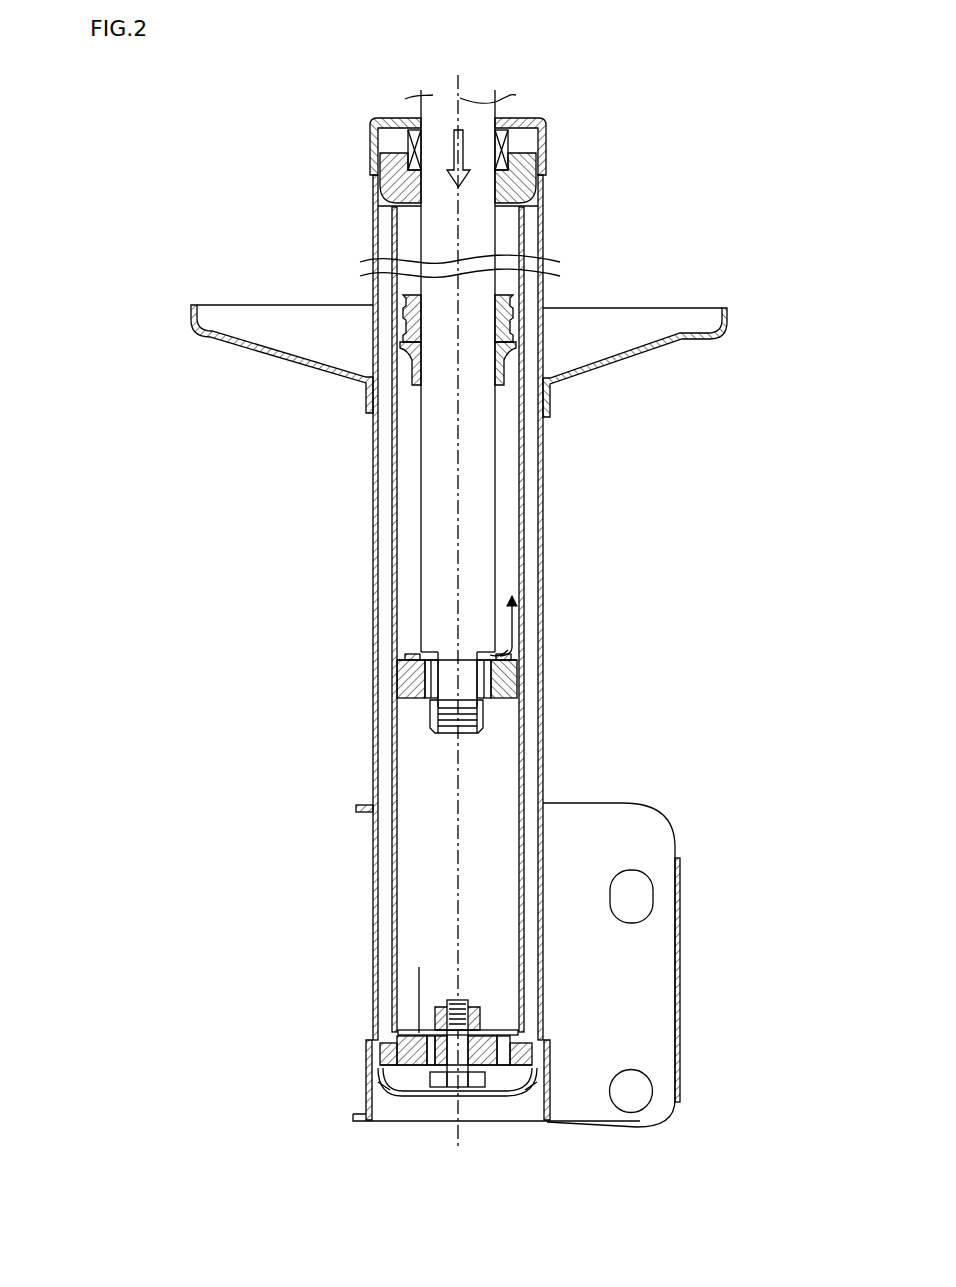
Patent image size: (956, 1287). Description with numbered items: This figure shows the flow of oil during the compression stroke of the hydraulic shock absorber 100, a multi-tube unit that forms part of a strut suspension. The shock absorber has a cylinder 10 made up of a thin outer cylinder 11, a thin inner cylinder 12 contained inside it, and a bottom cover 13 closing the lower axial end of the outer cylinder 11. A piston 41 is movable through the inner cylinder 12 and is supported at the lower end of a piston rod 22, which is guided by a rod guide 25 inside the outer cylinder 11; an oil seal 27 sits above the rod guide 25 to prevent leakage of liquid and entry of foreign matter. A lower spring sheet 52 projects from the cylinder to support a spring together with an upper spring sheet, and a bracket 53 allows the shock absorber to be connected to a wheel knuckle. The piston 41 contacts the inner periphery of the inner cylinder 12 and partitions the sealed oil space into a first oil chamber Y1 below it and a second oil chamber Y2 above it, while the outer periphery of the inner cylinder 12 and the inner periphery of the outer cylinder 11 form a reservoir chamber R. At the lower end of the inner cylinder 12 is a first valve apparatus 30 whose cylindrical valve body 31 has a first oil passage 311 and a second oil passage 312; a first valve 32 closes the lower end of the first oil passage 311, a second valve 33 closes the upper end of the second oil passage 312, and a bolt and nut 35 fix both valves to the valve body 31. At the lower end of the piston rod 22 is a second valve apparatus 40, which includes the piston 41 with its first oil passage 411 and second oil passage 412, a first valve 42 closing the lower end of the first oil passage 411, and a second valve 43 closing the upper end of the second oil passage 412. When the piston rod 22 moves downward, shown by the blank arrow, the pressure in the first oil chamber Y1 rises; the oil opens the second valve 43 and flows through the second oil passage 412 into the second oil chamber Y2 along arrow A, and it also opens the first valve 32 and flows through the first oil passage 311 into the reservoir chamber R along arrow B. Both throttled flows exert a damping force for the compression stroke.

The hydraulic shock absorber 100 is at (312, 110).
The cylinder 10 is at (327, 270).
The outer cylinder 11 is at (545, 498).
The inner cylinder 12 is at (545, 236).
The bottom cover 13 is at (407, 1093).
The piston rod 22 is at (480, 120).
The rod guide 25 is at (540, 185).
The oil seal 27 is at (408, 146).
The first valve apparatus 30 is at (473, 978).
The valve body 31 is at (368, 1047).
The first oil passage 311 is at (387, 1043).
The second oil passage 312 is at (540, 1040).
The first valve 32 is at (538, 1066).
The second valve 33 is at (412, 1030).
The bolt and nut 35 is at (453, 1003).
The second valve apparatus 40 is at (435, 744).
The piston 41 is at (396, 678).
The first oil passage 411 is at (394, 692).
The second oil passage 412 is at (517, 680).
The first valve 42 is at (417, 702).
The second valve 43 is at (400, 658).
The lower spring sheet 52 is at (193, 308).
The bracket 53 is at (682, 927).
The reservoir chamber R is at (530, 458).
The first oil chamber Y1 is at (506, 802).
The second oil chamber Y2 is at (513, 565).
The arrow A is at (513, 613).
The arrow B is at (418, 977).